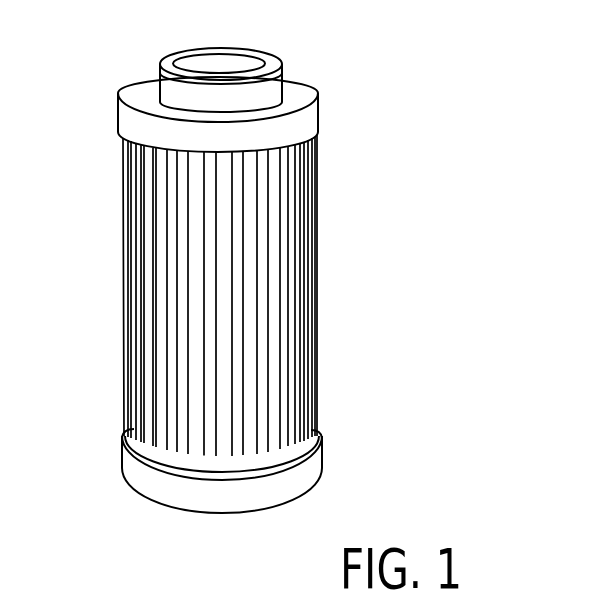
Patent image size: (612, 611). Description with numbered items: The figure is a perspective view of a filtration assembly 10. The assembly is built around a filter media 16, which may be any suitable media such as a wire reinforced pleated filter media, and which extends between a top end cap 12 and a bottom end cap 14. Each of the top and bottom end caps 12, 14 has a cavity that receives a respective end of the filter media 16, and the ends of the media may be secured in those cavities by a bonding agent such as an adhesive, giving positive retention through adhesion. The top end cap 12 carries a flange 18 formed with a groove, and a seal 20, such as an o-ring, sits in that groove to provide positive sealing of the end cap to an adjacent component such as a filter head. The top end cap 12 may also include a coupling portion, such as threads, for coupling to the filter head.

The filtration assembly 10 is at (436, 96).
The top end cap 12 is at (135, 96).
The bottom end cap 14 is at (312, 470).
The filter media 16 is at (300, 289).
The flange 18 is at (251, 50).
The seal 20 is at (279, 76).